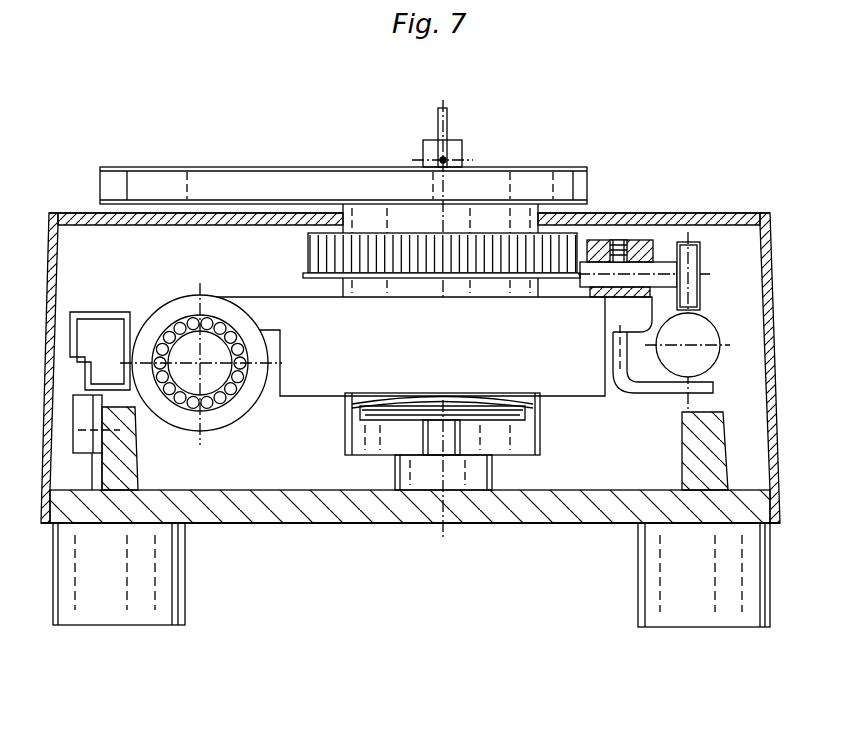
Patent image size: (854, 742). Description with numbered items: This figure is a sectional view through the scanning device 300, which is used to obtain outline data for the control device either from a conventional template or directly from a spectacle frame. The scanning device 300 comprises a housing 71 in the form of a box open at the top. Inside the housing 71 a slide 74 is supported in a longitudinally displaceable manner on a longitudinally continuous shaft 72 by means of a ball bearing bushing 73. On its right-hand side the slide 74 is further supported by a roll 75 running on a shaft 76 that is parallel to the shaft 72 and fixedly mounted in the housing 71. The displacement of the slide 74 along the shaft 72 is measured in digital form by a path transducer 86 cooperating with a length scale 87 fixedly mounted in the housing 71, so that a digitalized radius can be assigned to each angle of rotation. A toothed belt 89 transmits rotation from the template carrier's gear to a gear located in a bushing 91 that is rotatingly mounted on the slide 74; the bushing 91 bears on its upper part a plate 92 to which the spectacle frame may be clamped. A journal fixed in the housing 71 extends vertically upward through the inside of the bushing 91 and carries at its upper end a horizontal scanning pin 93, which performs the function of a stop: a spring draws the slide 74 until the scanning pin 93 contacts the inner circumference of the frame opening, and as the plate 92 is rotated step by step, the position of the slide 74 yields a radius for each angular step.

The scanning device 300 is at (617, 95).
The housing 71 is at (217, 520).
The shaft 72 is at (215, 382).
The ball bearing bushing 73 is at (220, 408).
The slide 74 is at (270, 300).
The roll 75 is at (697, 290).
The shaft 76 is at (707, 363).
The path transducer 86 is at (95, 337).
The length scale 87 is at (85, 410).
The toothed belt 89 is at (308, 254).
The bushing 91 is at (383, 417).
The plate 92 is at (590, 177).
The scanning pin 93 is at (447, 158).